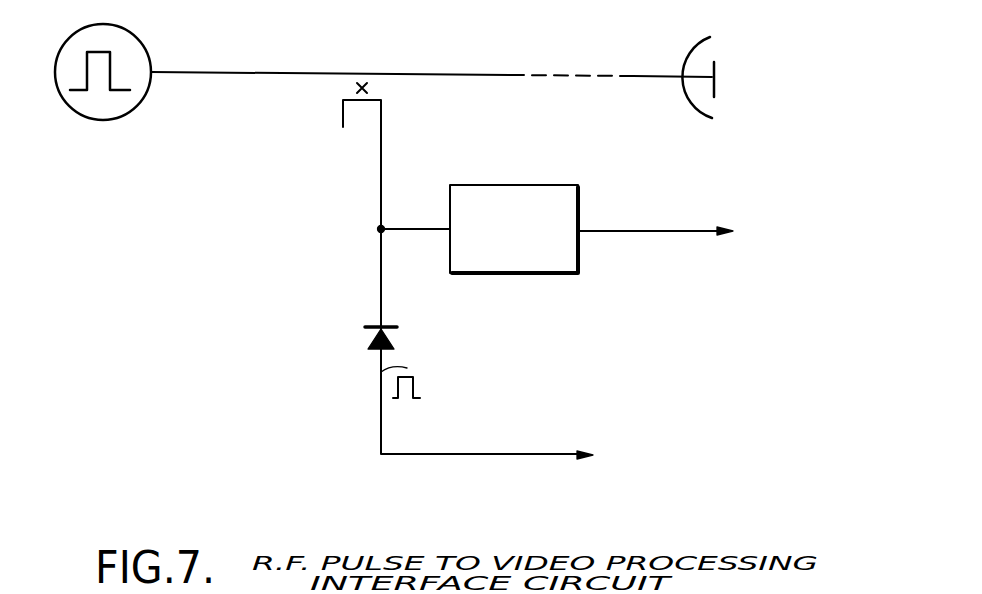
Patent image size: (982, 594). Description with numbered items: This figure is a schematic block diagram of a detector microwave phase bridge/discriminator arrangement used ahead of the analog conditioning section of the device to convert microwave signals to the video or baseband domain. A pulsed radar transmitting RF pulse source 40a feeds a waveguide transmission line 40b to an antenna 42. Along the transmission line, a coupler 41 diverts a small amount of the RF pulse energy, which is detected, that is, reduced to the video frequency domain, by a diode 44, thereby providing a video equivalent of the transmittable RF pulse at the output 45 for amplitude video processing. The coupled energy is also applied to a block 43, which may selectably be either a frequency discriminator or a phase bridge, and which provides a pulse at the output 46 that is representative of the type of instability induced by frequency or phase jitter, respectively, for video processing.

The RF pulse source 40a is at (152, 58).
The waveguide transmission line 40b is at (292, 72).
The coupler 41 is at (388, 90).
The antenna 42 is at (695, 46).
The block 43 is at (497, 273).
The diode 44 is at (375, 325).
The video equivalent output 45 is at (518, 453).
The discriminator/bridge pulse output 46 is at (625, 231).